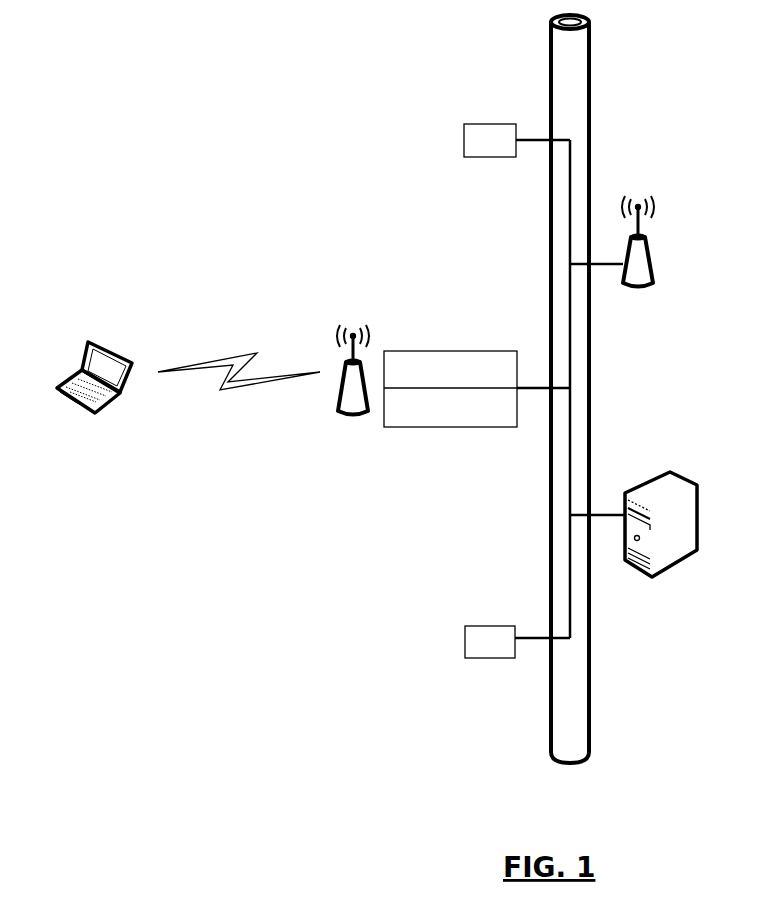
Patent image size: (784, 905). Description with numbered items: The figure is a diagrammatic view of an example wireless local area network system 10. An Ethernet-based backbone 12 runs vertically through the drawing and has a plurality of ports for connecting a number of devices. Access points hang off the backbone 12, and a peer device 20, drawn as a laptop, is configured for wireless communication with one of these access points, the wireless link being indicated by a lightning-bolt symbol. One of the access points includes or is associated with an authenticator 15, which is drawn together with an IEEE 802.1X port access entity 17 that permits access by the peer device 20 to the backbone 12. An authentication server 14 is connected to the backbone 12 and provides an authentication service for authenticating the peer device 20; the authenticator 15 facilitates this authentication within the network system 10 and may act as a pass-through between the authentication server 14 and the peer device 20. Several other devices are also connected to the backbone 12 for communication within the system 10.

The wireless local area network system 10 is at (327, 146).
The Ethernet-based backbone 12 is at (552, 24).
The authentication server 14 is at (686, 478).
The authenticator 15 is at (452, 351).
The IEEE 802.1X port access entity 17 is at (448, 428).
The peer device 20 is at (90, 344).